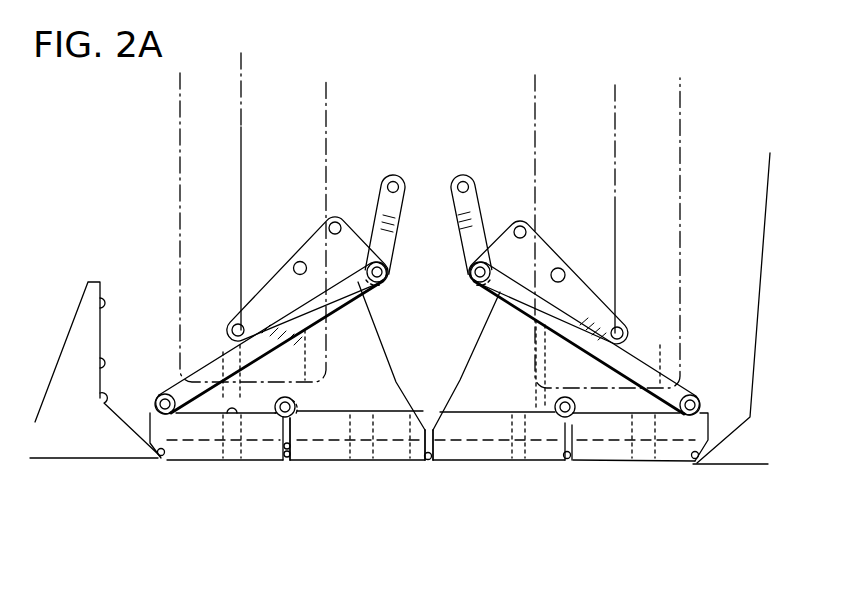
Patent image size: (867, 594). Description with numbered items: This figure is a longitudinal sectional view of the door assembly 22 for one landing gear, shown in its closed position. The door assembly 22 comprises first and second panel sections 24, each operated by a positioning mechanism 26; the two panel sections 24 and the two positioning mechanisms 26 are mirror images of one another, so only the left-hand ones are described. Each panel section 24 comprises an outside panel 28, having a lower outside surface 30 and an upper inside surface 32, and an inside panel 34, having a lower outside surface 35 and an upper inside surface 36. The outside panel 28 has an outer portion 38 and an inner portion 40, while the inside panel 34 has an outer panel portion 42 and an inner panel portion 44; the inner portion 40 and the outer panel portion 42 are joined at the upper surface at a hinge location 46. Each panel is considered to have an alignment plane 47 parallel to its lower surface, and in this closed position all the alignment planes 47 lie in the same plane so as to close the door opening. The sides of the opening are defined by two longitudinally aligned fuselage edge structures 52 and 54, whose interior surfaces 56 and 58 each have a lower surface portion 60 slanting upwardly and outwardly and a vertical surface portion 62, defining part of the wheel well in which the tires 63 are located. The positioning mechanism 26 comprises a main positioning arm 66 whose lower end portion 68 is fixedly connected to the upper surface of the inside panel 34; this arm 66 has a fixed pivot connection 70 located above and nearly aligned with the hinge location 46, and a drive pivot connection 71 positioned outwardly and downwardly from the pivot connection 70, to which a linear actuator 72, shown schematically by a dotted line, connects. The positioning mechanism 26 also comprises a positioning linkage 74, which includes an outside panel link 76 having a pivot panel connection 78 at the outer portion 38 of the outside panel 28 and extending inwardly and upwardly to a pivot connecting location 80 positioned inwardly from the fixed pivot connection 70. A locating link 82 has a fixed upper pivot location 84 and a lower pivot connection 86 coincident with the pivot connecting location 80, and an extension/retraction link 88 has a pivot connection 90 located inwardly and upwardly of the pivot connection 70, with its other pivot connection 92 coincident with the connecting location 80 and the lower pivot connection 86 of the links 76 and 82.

The door assembly 22 is at (490, 492).
The panel section 24 is at (357, 478).
The positioning mechanism 26 is at (573, 245).
The outside panel 28 is at (203, 438).
The lower outside surface 30 is at (212, 458).
The upper inside surface 32 is at (234, 410).
The inside panel 34 is at (403, 457).
The lower outside surface 35 is at (397, 453).
The upper inside surface 36 is at (368, 404).
The outer portion 38 is at (172, 461).
The inner portion 40 is at (273, 450).
The outer panel portion 42 is at (296, 448).
The inner panel portion 44 is at (417, 460).
The hinge location 46 is at (278, 423).
The alignment plane 47 is at (193, 443).
The edge structure 52 is at (80, 343).
The edge structure 54 is at (737, 450).
The interior surface 56 is at (100, 365).
The interior surface 58 is at (767, 206).
The lower surface portion 60 is at (102, 400).
The vertical surface portion 62 is at (100, 298).
The tires 63 is at (180, 131).
The main positioning arm 66 is at (373, 365).
The lower end portion 68 is at (387, 398).
The fixed pivot connection 70 is at (300, 260).
The drive pivot connection 71 is at (232, 332).
The linear actuator 72 is at (240, 256).
The positioning linkage 74 is at (425, 190).
The outside panel link 76 is at (213, 365).
The pivot panel connection 78 is at (165, 395).
The pivot connecting location 80 is at (388, 272).
The locating link 82 is at (398, 200).
The fixed upper pivot location 84 is at (402, 190).
The lower pivot connection 86 is at (390, 278).
The extension/retraction link 88 is at (362, 242).
The pivot connection 90 is at (357, 235).
The pivot connection 92 is at (391, 282).